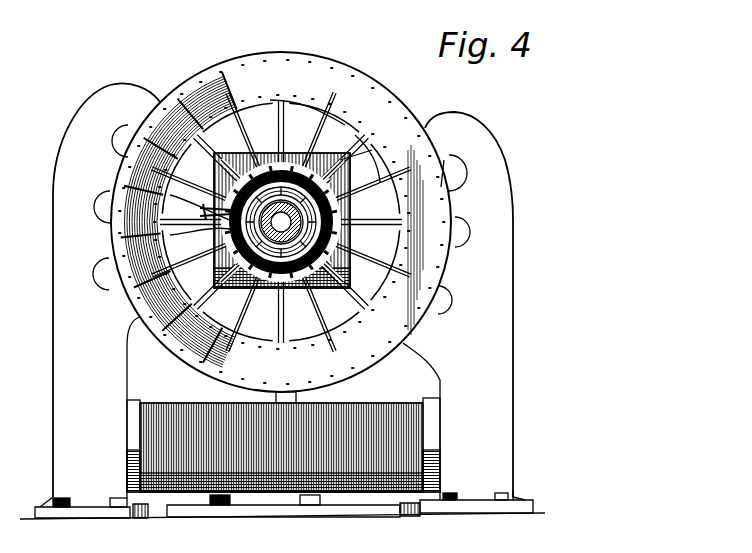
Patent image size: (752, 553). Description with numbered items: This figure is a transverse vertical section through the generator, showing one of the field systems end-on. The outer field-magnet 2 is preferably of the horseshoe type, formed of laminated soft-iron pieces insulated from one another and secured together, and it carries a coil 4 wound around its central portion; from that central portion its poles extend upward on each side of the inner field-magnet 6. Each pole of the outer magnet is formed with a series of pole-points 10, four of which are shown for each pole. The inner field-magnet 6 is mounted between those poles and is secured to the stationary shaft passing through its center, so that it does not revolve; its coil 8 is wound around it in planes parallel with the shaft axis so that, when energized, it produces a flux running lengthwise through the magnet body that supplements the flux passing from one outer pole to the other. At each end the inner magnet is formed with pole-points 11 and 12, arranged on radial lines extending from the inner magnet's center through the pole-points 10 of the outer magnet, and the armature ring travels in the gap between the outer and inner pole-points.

The outer field-magnet 2 is at (282, 301).
The coil 4 is at (415, 452).
The inner field-magnet 6 is at (350, 190).
The coil 8 is at (310, 155).
The pole-point 10 is at (430, 180).
The pole-point 11 is at (222, 190).
The pole-point 12 is at (333, 214).